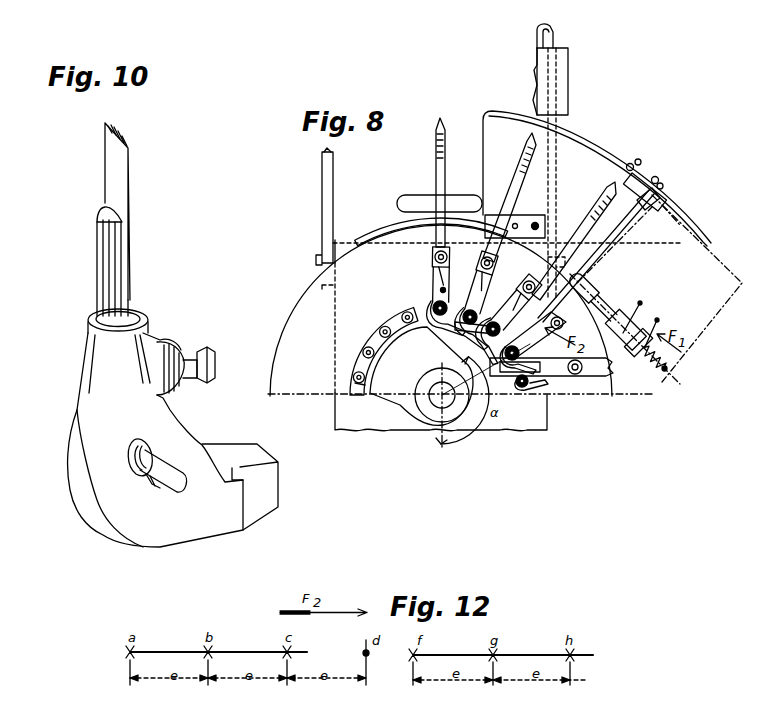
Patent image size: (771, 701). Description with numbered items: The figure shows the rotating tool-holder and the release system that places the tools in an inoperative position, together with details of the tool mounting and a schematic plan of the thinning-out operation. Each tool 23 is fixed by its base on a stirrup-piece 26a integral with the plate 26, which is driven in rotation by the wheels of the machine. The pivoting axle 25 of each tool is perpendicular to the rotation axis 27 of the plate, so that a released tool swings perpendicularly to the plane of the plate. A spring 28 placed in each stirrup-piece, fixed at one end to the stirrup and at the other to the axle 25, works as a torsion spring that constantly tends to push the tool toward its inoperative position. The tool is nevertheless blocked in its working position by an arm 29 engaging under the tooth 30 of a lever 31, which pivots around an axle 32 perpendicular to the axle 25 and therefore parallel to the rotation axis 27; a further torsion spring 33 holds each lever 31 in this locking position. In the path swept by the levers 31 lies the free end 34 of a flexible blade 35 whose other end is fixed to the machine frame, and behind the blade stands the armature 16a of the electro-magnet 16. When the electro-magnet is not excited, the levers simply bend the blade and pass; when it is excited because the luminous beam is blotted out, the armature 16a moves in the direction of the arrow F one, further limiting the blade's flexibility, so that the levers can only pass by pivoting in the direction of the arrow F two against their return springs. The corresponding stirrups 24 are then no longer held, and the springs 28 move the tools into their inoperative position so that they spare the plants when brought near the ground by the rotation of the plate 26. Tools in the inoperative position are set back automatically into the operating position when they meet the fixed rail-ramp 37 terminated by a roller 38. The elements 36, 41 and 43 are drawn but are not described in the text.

In FIG. 8, the electro-magnet 16 is at (630, 330).
In FIG. 8, the armature 16a is at (594, 283).
In FIG. 10, the tool 23 is at (130, 175).
In FIG. 8, the tool 23 is at (435, 148).
In FIG. 10, the stirrup 24 is at (93, 378).
In FIG. 8, the stirrup 24 is at (432, 265).
In FIG. 10, the pivoting axle 25 is at (165, 467).
In FIG. 8, the plate 26 is at (380, 390).
In FIG. 8, the stirrup-piece 26a is at (440, 290).
In FIG. 8, the rotation axis 27 is at (430, 388).
In FIG. 10, the spring 28 is at (130, 465).
In FIG. 10, the arm 29 is at (253, 455).
In FIG. 8, the arm 29 is at (430, 307).
In FIG. 8, the tooth 30 is at (451, 246).
In FIG. 8, the lever 31 is at (478, 268).
In FIG. 8, the axle 32 is at (477, 334).
In FIG. 8, the spring 33 is at (418, 327).
In FIG. 8, the end of the flexible blade 34 is at (548, 318).
In FIG. 8, the flexible blade 35 is at (605, 268).
In FIG. 8, the bracket 36 is at (660, 195).
In FIG. 8, the rail-ramp 37 is at (383, 226).
In FIG. 8, the roller 38 is at (400, 202).
In FIG. 8, the hook member 41 is at (567, 92).
In FIG. 8, the bar 43 is at (322, 200).